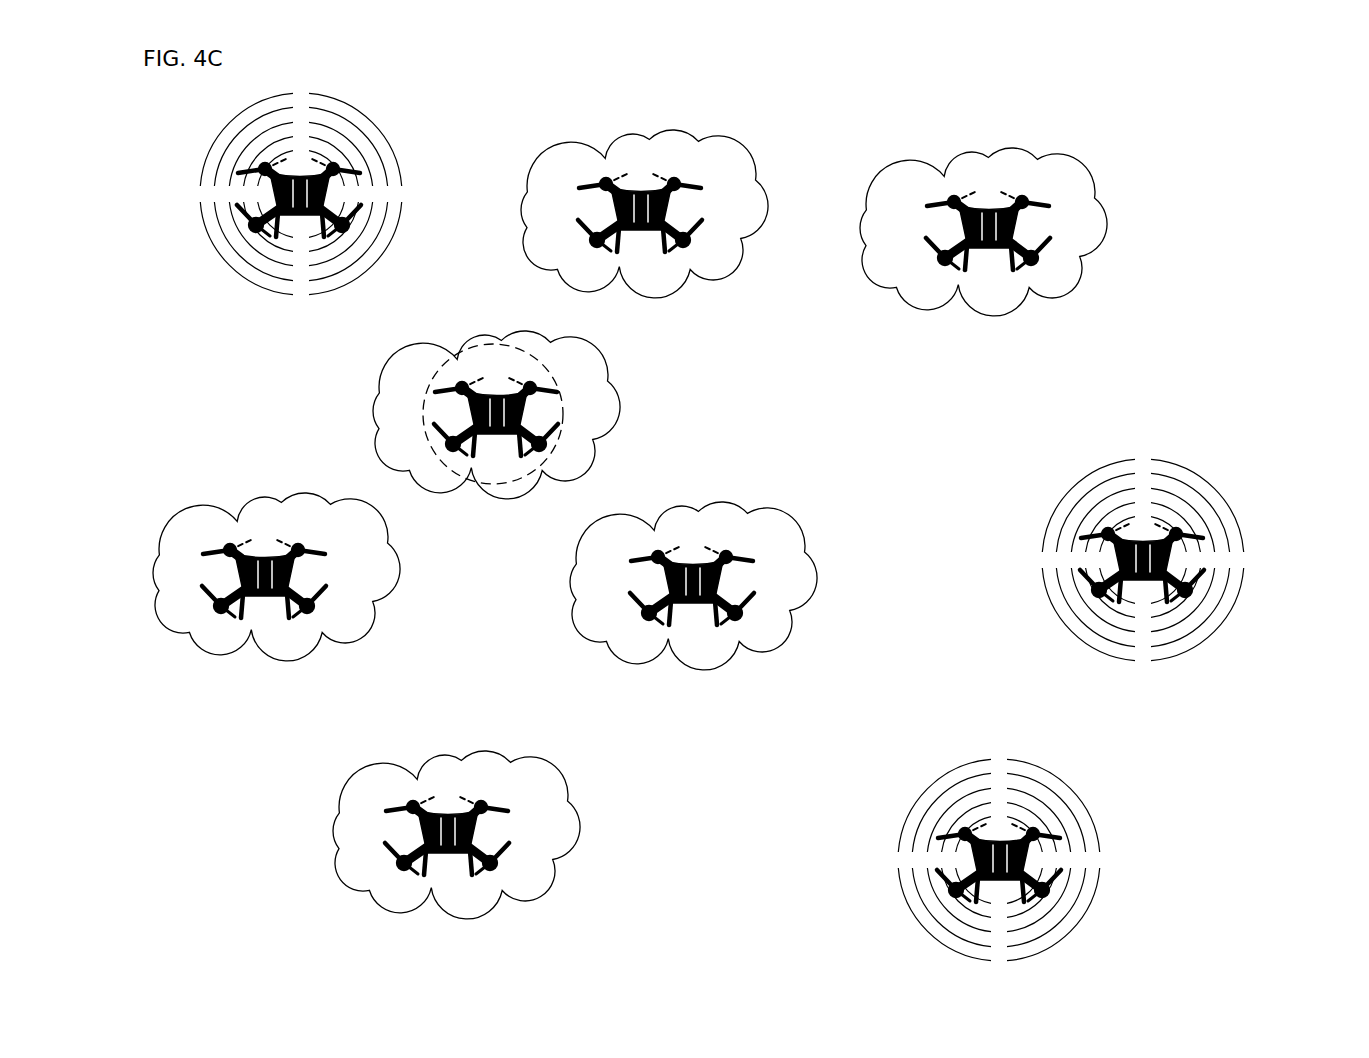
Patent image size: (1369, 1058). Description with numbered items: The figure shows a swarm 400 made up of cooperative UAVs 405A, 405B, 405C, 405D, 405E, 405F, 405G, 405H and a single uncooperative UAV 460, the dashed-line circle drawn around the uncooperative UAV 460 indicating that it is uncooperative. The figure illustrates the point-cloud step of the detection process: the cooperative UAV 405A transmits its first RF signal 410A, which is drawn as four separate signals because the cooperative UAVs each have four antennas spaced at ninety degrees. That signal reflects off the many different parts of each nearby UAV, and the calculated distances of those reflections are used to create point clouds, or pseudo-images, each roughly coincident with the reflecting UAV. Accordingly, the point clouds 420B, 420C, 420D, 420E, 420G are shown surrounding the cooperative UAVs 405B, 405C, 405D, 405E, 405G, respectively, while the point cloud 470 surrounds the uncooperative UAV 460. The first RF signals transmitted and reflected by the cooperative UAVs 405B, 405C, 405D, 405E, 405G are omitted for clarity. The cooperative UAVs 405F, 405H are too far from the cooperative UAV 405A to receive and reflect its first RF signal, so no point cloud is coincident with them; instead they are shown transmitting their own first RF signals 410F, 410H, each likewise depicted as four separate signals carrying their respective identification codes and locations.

The swarm 400 is at (1240, 122).
The cooperative UAV 405A is at (242, 234).
The cooperative UAV 405B is at (578, 243).
The cooperative UAV 405C is at (925, 265).
The cooperative UAV 405D is at (222, 633).
The cooperative UAV 405E is at (632, 613).
The cooperative UAV 405F is at (1083, 593).
The cooperative UAV 405G is at (385, 865).
The cooperative UAV 405H is at (939, 893).
The first RF signal 410A is at (346, 185).
The first RF signal 410F is at (1186, 548).
The first RF signal 410H is at (1043, 848).
The point cloud 420B is at (678, 193).
The point cloud 420C is at (1001, 213).
The point cloud 420D is at (339, 577).
The point cloud 420E is at (734, 567).
The point cloud 420G is at (512, 830).
The uncooperative UAV 460 is at (547, 414).
The point cloud 470 is at (439, 415).